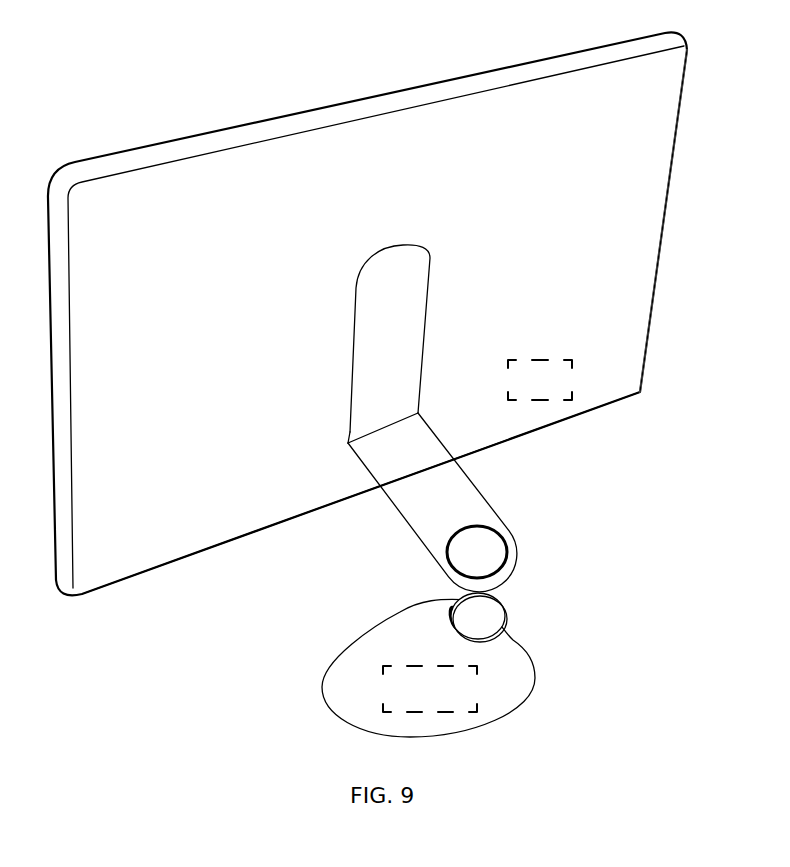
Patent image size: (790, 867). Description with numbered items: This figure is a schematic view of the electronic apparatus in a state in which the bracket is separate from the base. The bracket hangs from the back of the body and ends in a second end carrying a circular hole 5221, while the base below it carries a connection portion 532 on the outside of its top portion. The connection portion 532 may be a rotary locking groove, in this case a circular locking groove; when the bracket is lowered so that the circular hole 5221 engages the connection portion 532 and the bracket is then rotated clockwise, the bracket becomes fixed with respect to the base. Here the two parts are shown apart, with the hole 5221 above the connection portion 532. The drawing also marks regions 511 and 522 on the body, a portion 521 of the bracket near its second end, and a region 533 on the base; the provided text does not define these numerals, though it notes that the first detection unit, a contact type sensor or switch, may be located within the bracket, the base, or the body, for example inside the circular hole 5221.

The display body 511 is at (257, 448).
The support arm 521 is at (450, 610).
The connecting portion 522 is at (558, 383).
The circular hole 5221 is at (485, 553).
The connection portion 532 is at (508, 632).
The base 533 is at (428, 668).